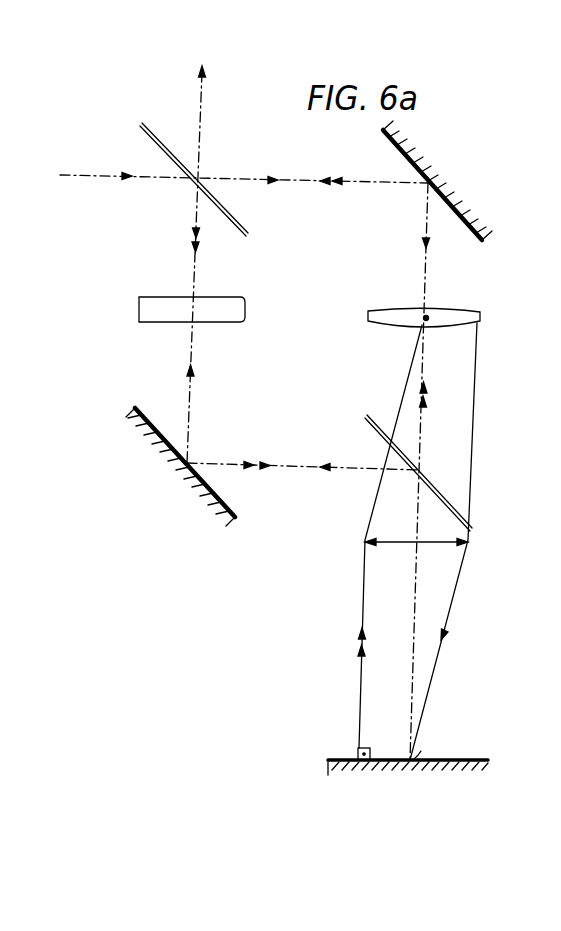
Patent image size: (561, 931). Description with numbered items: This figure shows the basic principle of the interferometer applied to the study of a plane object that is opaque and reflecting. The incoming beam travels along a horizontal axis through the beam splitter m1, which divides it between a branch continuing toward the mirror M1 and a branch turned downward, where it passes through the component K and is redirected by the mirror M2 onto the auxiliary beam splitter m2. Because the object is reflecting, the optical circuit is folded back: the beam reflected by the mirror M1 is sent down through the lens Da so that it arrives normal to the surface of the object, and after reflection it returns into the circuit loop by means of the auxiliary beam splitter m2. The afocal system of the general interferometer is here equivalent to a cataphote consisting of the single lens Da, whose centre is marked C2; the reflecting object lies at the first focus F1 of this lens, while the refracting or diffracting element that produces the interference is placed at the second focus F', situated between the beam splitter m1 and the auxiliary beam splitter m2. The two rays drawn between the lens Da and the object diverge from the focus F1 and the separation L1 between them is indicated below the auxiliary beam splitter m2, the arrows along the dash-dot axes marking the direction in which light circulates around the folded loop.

The first beam splitter m1 is at (191, 168).
The first mirror M1 is at (437, 180).
The tiltable plane-parallel plate K is at (109, 286).
The second mirror M2 is at (180, 467).
The second beam splitter m2 is at (407, 461).
The lens (objective) Da is at (445, 321).
The centre of lens C2 is at (428, 322).
The image focal point F' is at (394, 342).
The beam width L1 is at (432, 552).
The focal point on mirror F1 is at (430, 747).